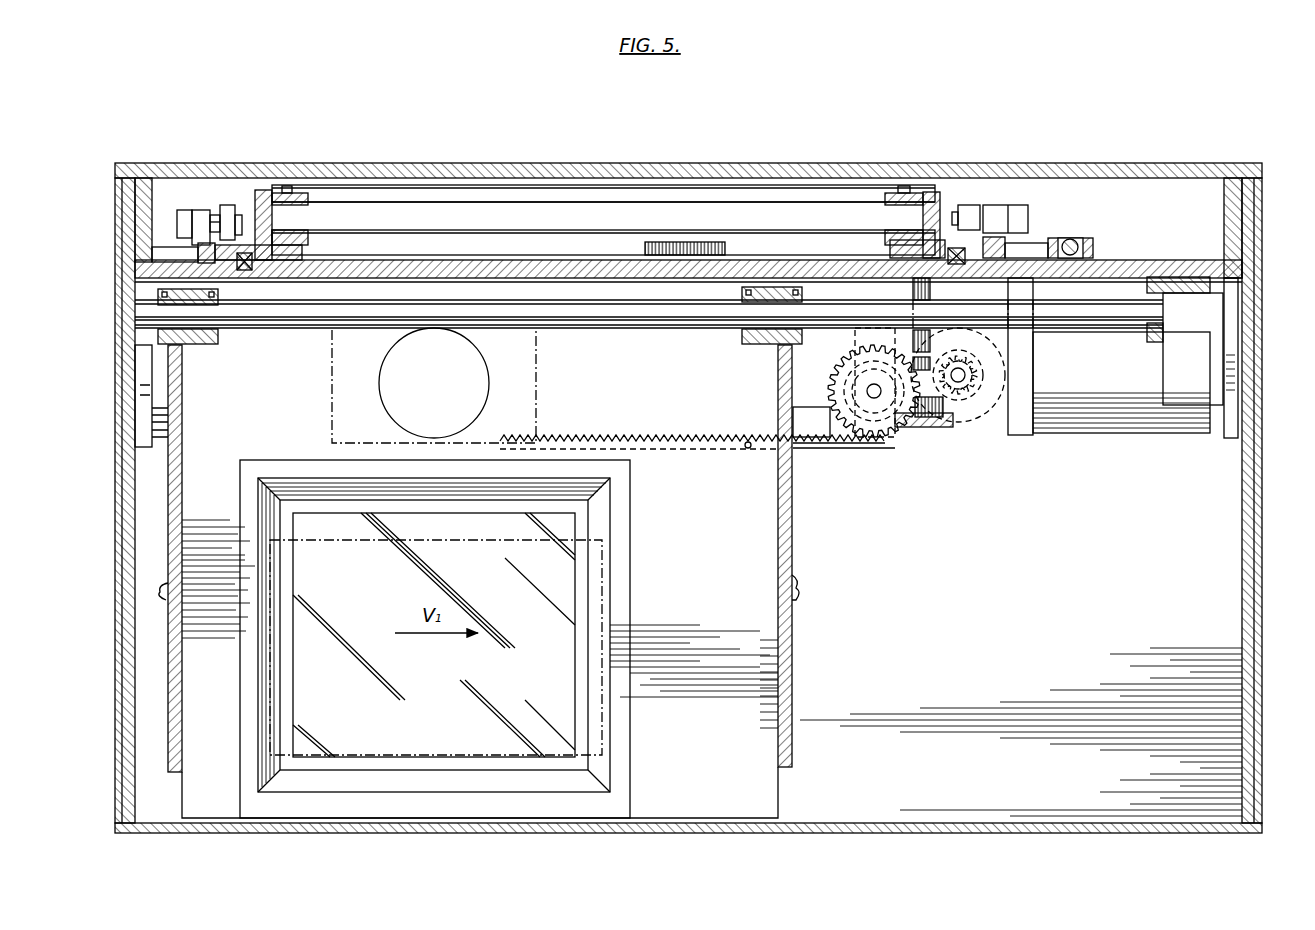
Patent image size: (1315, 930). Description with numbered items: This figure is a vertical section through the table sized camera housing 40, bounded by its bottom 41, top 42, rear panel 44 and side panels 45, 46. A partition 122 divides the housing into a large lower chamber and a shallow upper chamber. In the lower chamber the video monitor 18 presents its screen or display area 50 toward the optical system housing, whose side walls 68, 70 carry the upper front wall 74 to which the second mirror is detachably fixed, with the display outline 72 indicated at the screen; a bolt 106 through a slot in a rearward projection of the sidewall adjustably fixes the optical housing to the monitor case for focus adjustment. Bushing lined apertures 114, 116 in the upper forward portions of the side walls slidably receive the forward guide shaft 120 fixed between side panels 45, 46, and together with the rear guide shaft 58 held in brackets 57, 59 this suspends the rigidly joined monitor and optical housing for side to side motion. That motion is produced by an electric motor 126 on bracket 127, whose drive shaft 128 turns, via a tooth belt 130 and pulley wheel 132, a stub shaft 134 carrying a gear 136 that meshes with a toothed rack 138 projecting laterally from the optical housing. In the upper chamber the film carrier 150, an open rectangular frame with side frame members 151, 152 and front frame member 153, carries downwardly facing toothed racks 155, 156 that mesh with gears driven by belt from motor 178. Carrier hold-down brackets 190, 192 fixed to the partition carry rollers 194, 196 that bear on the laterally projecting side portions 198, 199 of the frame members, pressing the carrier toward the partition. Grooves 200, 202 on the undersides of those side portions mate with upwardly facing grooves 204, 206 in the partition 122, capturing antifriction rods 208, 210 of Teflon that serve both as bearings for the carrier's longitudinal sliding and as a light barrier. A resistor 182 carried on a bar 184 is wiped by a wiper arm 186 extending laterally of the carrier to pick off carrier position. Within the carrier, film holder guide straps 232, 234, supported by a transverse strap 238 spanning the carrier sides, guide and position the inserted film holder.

The video monitor 18 is at (790, 791).
The camera housing 40 is at (687, 520).
The bottom 41 is at (654, 830).
The top 42 is at (577, 221).
The rear panel 44 is at (1015, 606).
The side panel 45 is at (120, 528).
The side panel 46 is at (1262, 545).
The screen or display area 50 is at (435, 639).
The bracket 57 is at (140, 426).
The rear guide shaft 58 is at (165, 423).
The bracket 59 is at (1236, 440).
The optical housing side wall 68 is at (180, 522).
The optical housing side wall 70 is at (795, 560).
The mirror outline 72 is at (438, 540).
The upper front wall 74 is at (543, 402).
The bolt 106 is at (158, 594).
The bushing lined aperture 114 is at (205, 345).
The bushing lined aperture 116 is at (760, 345).
The forward guide shaft 120 is at (640, 328).
The partition 122 is at (440, 270).
The electric motor 126 is at (1034, 356).
The bracket 127 is at (1000, 432).
The drive shaft 128 is at (958, 372).
The tooth belt 130 is at (960, 440).
The pulley wheel 132 is at (900, 438).
The stub shaft 134 is at (872, 390).
The gear 136 is at (872, 445).
The toothed rack 138 is at (805, 449).
The film carrier 150 is at (612, 205).
The side frame member 151 is at (266, 190).
The side frame member 152 is at (932, 195).
The front frame member 153 is at (462, 200).
The toothed rack 155 is at (200, 255).
The toothed rack 156 is at (968, 258).
The motor 178 is at (1128, 363).
The electrical resistor 182 is at (1080, 246).
The bar 184 is at (1098, 254).
The wiper arm 186 is at (1070, 238).
The carrier hold-down bracket 190 is at (180, 220).
The carrier hold-down bracket 192 is at (988, 210).
The roller 194 is at (228, 205).
The roller 196 is at (978, 207).
The side portion 198 is at (212, 240).
The side portion 199 is at (990, 250).
The groove 200 is at (262, 250).
The groove 202 is at (948, 255).
The groove 204 is at (258, 270).
The groove 206 is at (950, 264).
The antifriction rod 208 is at (248, 270).
The antifriction rod 210 is at (960, 268).
The film holder guide strap 232 is at (300, 202).
The film holder guide strap 234 is at (893, 195).
The transverse strap 238 is at (375, 187).